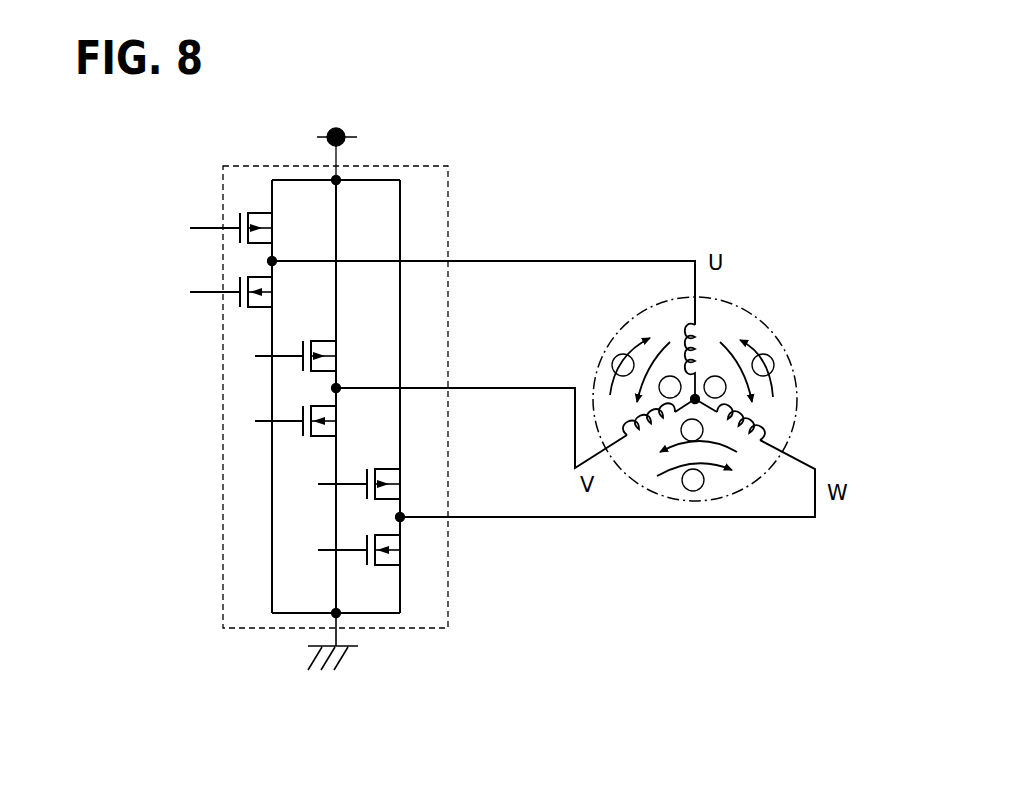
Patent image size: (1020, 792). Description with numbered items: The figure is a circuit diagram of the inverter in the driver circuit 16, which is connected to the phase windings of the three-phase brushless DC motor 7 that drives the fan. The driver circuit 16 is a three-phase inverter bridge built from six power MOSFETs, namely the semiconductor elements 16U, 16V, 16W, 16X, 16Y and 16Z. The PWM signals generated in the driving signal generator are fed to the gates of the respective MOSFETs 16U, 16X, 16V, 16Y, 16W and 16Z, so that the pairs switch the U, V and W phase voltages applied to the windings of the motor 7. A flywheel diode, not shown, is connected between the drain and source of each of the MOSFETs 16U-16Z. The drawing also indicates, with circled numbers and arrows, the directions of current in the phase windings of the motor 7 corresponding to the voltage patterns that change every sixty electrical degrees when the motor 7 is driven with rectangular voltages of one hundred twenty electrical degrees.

The driver circuit 16 is at (419, 165).
The power MOSFET 16U is at (277, 233).
The power MOSFET 16X is at (277, 283).
The power MOSFET 16V is at (342, 358).
The power MOSFET 16Y is at (340, 415).
The power MOSFET 16W is at (403, 485).
The power MOSFET 16Z is at (403, 551).
The three-phase brushless DC motor 7 is at (797, 372).